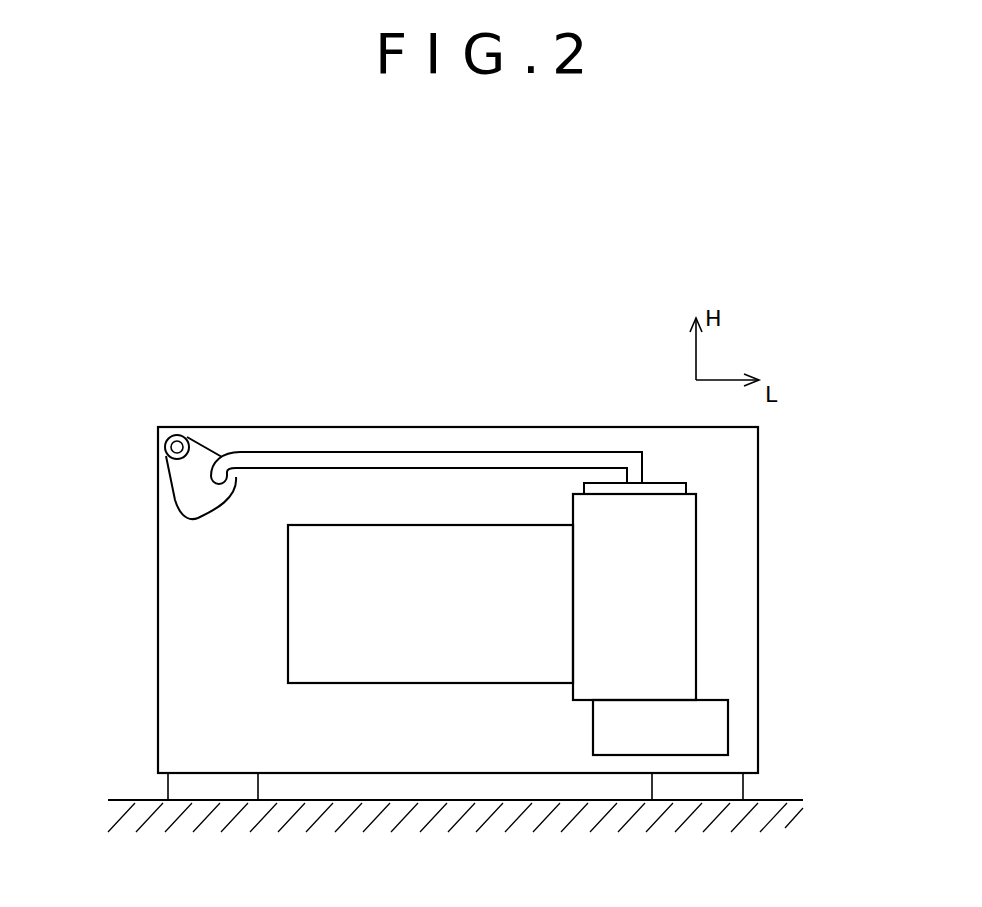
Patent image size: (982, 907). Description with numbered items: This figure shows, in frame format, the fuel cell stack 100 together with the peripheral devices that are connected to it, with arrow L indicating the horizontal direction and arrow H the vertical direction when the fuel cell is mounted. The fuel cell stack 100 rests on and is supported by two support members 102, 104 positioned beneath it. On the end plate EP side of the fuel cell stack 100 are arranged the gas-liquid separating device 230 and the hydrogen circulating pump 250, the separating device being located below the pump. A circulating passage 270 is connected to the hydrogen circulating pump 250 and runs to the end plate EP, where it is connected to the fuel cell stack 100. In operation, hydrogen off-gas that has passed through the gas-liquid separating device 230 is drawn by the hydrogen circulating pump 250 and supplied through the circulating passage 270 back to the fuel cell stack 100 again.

The fuel cell stack 100 is at (229, 365).
The end plate EP is at (758, 530).
The circulating passage 270 is at (437, 452).
The hydrogen circulating pump 250 is at (523, 683).
The gas-liquid separating device 230 is at (728, 725).
The support member 102 is at (168, 782).
The support member 104 is at (743, 778).